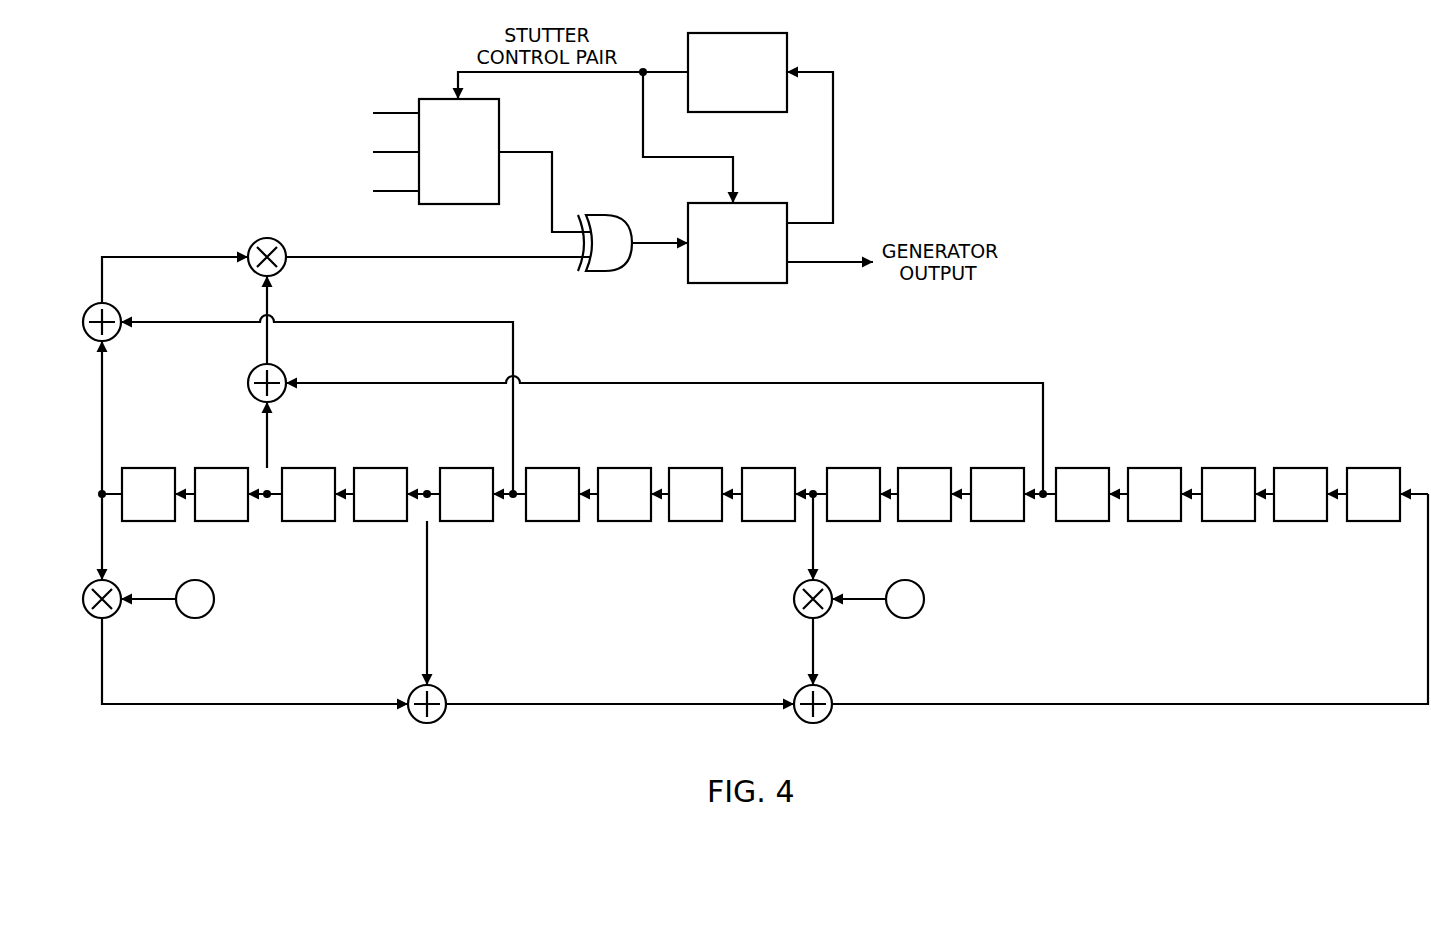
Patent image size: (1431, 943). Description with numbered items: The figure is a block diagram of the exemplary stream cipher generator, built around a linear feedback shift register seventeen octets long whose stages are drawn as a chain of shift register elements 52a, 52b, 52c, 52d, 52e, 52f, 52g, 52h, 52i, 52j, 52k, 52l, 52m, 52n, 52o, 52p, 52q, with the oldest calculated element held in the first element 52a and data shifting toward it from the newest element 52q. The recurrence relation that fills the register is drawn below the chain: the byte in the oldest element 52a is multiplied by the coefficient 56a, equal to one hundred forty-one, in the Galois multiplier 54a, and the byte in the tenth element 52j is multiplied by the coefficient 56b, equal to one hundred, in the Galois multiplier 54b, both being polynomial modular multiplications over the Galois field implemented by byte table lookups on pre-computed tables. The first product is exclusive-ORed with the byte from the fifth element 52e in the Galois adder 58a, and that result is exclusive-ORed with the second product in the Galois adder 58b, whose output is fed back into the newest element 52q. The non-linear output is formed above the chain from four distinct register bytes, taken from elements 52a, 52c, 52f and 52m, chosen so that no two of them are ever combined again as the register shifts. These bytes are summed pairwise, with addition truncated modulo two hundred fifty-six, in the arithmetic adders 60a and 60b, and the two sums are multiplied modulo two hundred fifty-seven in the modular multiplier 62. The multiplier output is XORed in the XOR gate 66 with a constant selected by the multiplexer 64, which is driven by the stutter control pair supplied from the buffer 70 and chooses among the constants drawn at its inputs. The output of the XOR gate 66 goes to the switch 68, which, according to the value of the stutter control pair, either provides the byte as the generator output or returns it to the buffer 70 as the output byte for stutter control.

The shift register element 52a is at (128, 468).
The shift register element 52b is at (201, 468).
The shift register element 52c is at (288, 468).
The shift register element 52d is at (360, 468).
The shift register element 52e is at (446, 468).
The shift register element 52f is at (532, 468).
The shift register element 52g is at (604, 468).
The shift register element 52h is at (675, 468).
The shift register element 52i is at (748, 468).
The shift register element 52j is at (833, 468).
The shift register element 52k is at (904, 468).
The shift register element 52l is at (977, 468).
The shift register element 52m is at (1062, 468).
The shift register element 52n is at (1134, 468).
The shift register element 52o is at (1208, 468).
The shift register element 52p is at (1280, 468).
The shift register element 52q is at (1353, 468).
The Galois multiplier 54a is at (113, 586).
The Galois multiplier 54b is at (825, 586).
The coefficient 56a is at (206, 587).
The coefficient 56b is at (918, 587).
The Galois adder 58a is at (439, 691).
The Galois adder 58b is at (826, 691).
The arithmetic adder 60a is at (113, 310).
The arithmetic adder 60b is at (278, 369).
The modular multiplier 62 is at (261, 243).
The multiplexer 64 is at (438, 99).
The XOR gate 66 is at (609, 223).
The switch 68 is at (760, 203).
The buffer 70 is at (718, 33).